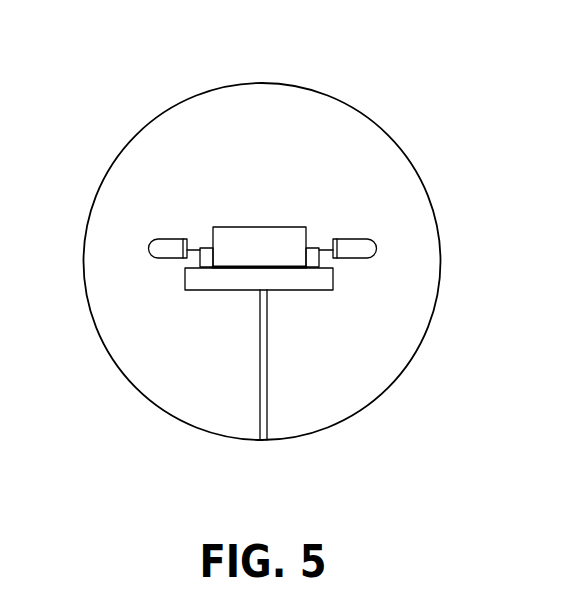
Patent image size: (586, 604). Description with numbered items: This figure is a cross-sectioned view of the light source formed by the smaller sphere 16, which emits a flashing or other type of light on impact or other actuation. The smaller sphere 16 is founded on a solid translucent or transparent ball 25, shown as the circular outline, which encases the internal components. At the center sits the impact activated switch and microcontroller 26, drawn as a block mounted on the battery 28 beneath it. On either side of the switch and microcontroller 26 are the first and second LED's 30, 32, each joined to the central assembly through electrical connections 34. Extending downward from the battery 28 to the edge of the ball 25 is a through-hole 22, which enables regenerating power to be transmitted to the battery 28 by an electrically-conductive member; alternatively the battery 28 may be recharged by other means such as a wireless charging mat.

The smaller sphere 16 is at (370, 92).
The translucent or transparent ball 25 is at (163, 112).
The impact activated switch and microcontroller 26 is at (257, 227).
The battery 28 is at (291, 291).
The first LED 30 is at (148, 249).
The second LED 32 is at (378, 248).
The electrical connections 34 is at (320, 262).
The through-hole 22 is at (260, 412).